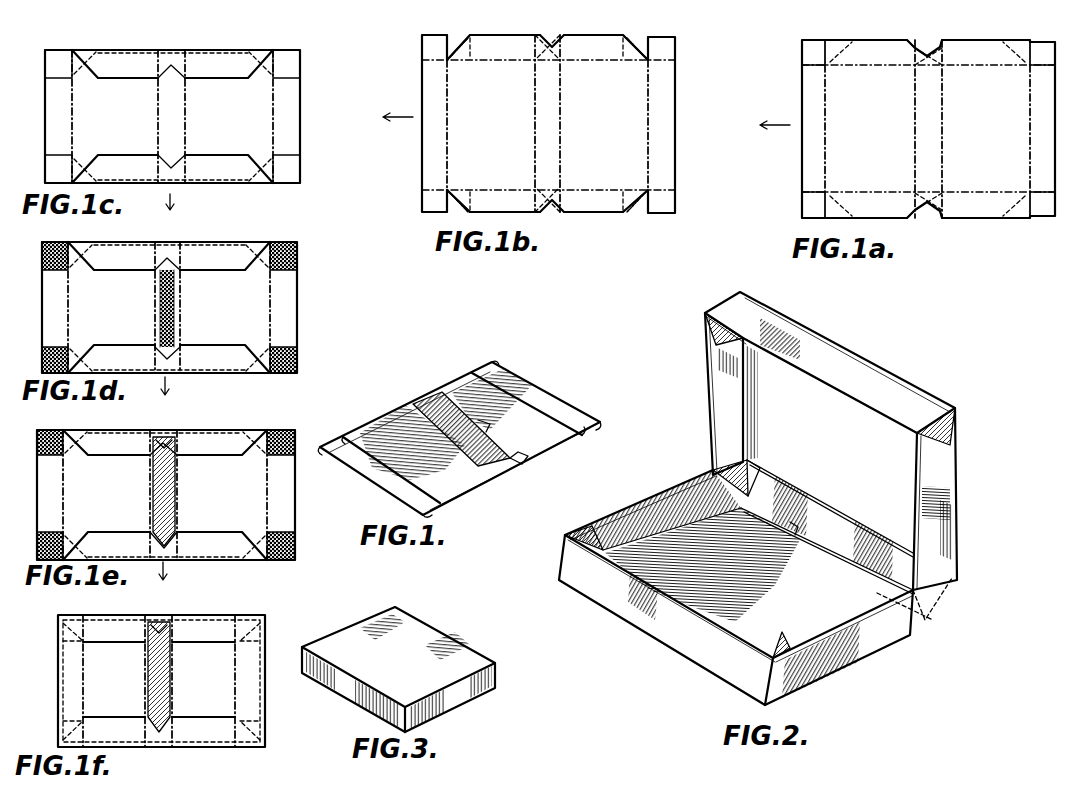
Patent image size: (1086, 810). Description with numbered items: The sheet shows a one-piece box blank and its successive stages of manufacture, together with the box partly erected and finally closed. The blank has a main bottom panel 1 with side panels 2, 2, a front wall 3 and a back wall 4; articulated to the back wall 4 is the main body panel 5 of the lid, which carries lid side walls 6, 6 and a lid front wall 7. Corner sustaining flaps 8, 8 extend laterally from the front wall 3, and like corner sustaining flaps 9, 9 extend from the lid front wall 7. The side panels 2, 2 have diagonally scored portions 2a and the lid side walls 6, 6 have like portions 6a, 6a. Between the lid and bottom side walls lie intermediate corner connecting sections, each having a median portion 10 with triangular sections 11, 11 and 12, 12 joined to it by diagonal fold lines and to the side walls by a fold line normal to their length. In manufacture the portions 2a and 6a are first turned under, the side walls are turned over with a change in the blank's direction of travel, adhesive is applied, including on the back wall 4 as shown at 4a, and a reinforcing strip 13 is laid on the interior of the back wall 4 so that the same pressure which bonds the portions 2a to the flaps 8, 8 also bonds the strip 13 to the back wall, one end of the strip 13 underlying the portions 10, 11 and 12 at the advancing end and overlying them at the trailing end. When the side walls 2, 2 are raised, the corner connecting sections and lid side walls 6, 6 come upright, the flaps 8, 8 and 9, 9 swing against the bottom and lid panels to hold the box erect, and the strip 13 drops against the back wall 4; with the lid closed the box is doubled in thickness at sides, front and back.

In FIG. 1C, the main bottom panel 1 is at (115, 116).
In FIG. 1D, the main bottom panel 1 is at (111, 307).
In FIG. 1E, the main bottom panel 1 is at (106, 495).
In FIG. 1F, the main bottom panel 1 is at (114, 681).
In FIG. 1B, the main bottom panel 1 is at (491, 123).
In FIG. 1A, the main bottom panel 1 is at (870, 129).
In FIG. 1, the main bottom panel 1 is at (412, 442).
In FIG. 2, the main bottom panel 1 is at (701, 565).
In FIG. 1C, the side panels 2 is at (118, 66).
In FIG. 1D, the side panels 2 is at (111, 307).
In FIG. 1E, the side panels 2 is at (106, 495).
In FIG. 1F, the side panels 2 is at (107, 630).
In FIG. 1B, the side panels 2 is at (493, 124).
In FIG. 1A, the side panels 2 is at (866, 129).
In FIG. 1, the side panels 2 is at (378, 425).
In FIG. 2, the side panels 2 is at (875, 647).
In FIG. 1C, the diagonally scored portions 2a is at (84, 54).
In FIG. 1D, the diagonally scored portions 2a is at (80, 265).
In FIG. 1E, the diagonally scored portions 2a is at (88, 418).
In FIG. 1B, the diagonally scored portions 2a is at (486, 27).
In FIG. 1A, the diagonally scored portions 2a is at (838, 30).
In FIG. 1C, the front wall 3 is at (60, 116).
In FIG. 1D, the front wall 3 is at (56, 307).
In FIG. 1E, the front wall 3 is at (53, 495).
In FIG. 1F, the front wall 3 is at (73, 681).
In FIG. 1B, the front wall 3 is at (436, 125).
In FIG. 1A, the front wall 3 is at (814, 128).
In FIG. 1, the front wall 3 is at (377, 480).
In FIG. 2, the front wall 3 is at (660, 620).
In FIG. 1C, the back wall 4 is at (171, 116).
In FIG. 1D, the back wall 4 is at (180, 290).
In FIG. 1E, the back wall 4 is at (163, 495).
In FIG. 1F, the back wall 4 is at (158, 681).
In FIG. 1B, the back wall 4 is at (547, 123).
In FIG. 1A, the back wall 4 is at (928, 129).
In FIG. 1D, the adhesive on back wall 4a is at (173, 316).
In FIG. 1C, the main body panel of the lid 5 is at (229, 116).
In FIG. 1D, the main body panel of the lid 5 is at (225, 307).
In FIG. 1E, the main body panel of the lid 5 is at (222, 495).
In FIG. 1F, the main body panel of the lid 5 is at (203, 681).
In FIG. 1B, the main body panel of the lid 5 is at (604, 123).
In FIG. 1A, the main body panel of the lid 5 is at (986, 129).
In FIG. 1, the main body panel of the lid 5 is at (520, 408).
In FIG. 3, the main body panel of the lid 5 is at (398, 657).
In FIG. 2, the main body panel of the lid 5 is at (847, 439).
In FIG. 1C, the lid side walls 6 is at (222, 66).
In FIG. 1D, the lid side walls 6 is at (225, 307).
In FIG. 1E, the lid side walls 6 is at (222, 495).
In FIG. 1F, the lid side walls 6 is at (205, 630).
In FIG. 1B, the lid side walls 6 is at (606, 124).
In FIG. 1A, the lid side walls 6 is at (986, 129).
In FIG. 1, the lid side walls 6 is at (461, 380).
In FIG. 3, the lid side walls 6 is at (452, 710).
In FIG. 2, the lid side walls 6 is at (722, 412).
In FIG. 1C, the diagonally scored portions of lid side walls 6a is at (260, 58).
In FIG. 1D, the diagonally scored portions of lid side walls 6a is at (248, 247).
In FIG. 1E, the diagonally scored portions of lid side walls 6a is at (252, 418).
In FIG. 1B, the diagonally scored portions of lid side walls 6a is at (618, 36).
In FIG. 1A, the diagonally scored portions of lid side walls 6a is at (1025, 43).
In FIG. 1C, the lid front wall 7 is at (283, 116).
In FIG. 1D, the lid front wall 7 is at (279, 307).
In FIG. 1E, the lid front wall 7 is at (275, 495).
In FIG. 1F, the lid front wall 7 is at (253, 688).
In FIG. 1B, the lid front wall 7 is at (657, 125).
In FIG. 1A, the lid front wall 7 is at (1039, 128).
In FIG. 1, the lid front wall 7 is at (567, 402).
In FIG. 3, the lid front wall 7 is at (357, 695).
In FIG. 2, the lid front wall 7 is at (824, 355).
In FIG. 1C, the corner sustaining flaps 8 is at (48, 56).
In FIG. 1D, the corner sustaining flaps 8 is at (54, 267).
In FIG. 1E, the corner sustaining flaps 8 is at (63, 455).
In FIG. 1B, the corner sustaining flaps 8 is at (406, 197).
In FIG. 1A, the corner sustaining flaps 8 is at (800, 50).
In FIG. 2, the corner sustaining flaps 8 is at (597, 533).
In FIG. 1C, the corner sustaining flaps of lid 9 is at (293, 67).
In FIG. 1D, the corner sustaining flaps of lid 9 is at (287, 274).
In FIG. 1E, the corner sustaining flaps of lid 9 is at (272, 458).
In FIG. 1B, the corner sustaining flaps of lid 9 is at (668, 48).
In FIG. 1A, the corner sustaining flaps of lid 9 is at (1042, 129).
In FIG. 2, the corner sustaining flaps of lid 9 is at (720, 352).
In FIG. 1E, the median portion 10 is at (170, 557).
In FIG. 1B, the median portion 10 is at (547, 123).
In FIG. 1A, the median portion 10 is at (932, 67).
In FIG. 1, the median portion 10 is at (518, 470).
In FIG. 2, the median portion 10 is at (933, 600).
In FIG. 1A, the triangular sections 11 is at (915, 30).
In FIG. 2, the triangular sections 11 is at (707, 477).
In FIG. 1A, the triangular sections 12 is at (938, 41).
In FIG. 2, the triangular sections 12 is at (760, 463).
In FIG. 1E, the reinforcing strip 13 is at (173, 502).
In FIG. 1F, the reinforcing strip 13 is at (158, 685).
In FIG. 1, the reinforcing strip 13 is at (473, 437).
In FIG. 2, the reinforcing strip 13 is at (795, 528).